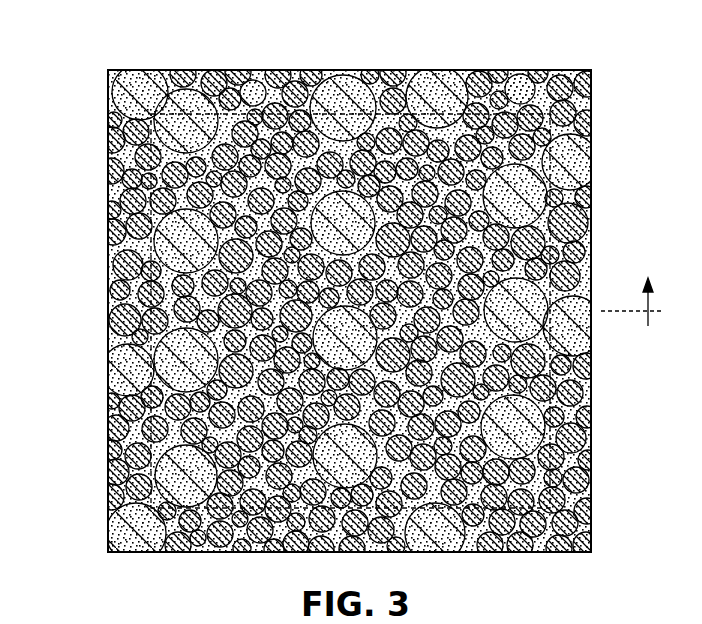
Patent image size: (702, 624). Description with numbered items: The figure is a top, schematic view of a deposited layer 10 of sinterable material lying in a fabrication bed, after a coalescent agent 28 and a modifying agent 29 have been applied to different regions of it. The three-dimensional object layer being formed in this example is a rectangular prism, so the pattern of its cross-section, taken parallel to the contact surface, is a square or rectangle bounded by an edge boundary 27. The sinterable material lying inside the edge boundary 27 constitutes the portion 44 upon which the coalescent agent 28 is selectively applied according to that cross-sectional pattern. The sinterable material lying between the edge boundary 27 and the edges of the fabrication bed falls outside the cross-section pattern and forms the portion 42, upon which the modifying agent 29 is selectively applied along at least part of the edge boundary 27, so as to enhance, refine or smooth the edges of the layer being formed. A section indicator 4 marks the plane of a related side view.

The layer 10 is at (350, 97).
The edge boundary 27 is at (179, 104).
The coalescent agent 28 is at (488, 166).
The modifying agent 29 is at (583, 397).
The portion 42 is at (513, 82).
The portion 44 is at (100, 456).
The section line for FIG. 4 is at (631, 286).